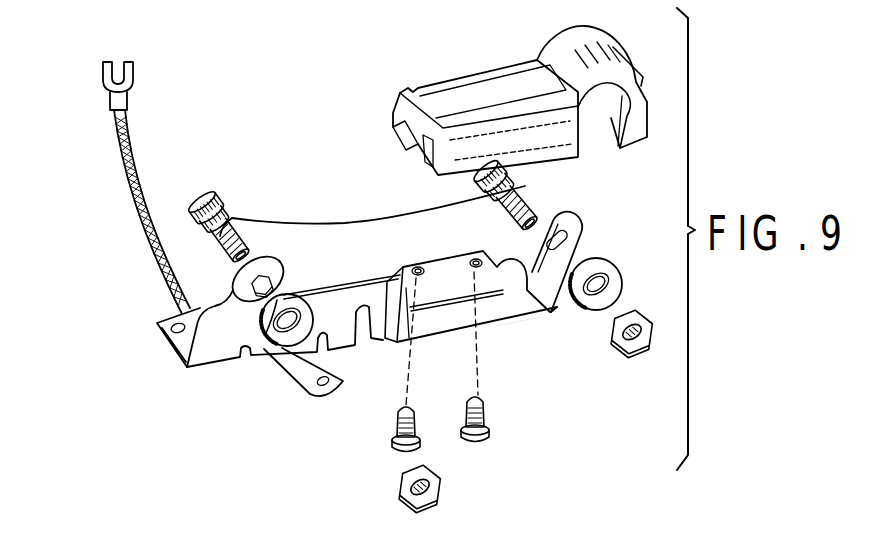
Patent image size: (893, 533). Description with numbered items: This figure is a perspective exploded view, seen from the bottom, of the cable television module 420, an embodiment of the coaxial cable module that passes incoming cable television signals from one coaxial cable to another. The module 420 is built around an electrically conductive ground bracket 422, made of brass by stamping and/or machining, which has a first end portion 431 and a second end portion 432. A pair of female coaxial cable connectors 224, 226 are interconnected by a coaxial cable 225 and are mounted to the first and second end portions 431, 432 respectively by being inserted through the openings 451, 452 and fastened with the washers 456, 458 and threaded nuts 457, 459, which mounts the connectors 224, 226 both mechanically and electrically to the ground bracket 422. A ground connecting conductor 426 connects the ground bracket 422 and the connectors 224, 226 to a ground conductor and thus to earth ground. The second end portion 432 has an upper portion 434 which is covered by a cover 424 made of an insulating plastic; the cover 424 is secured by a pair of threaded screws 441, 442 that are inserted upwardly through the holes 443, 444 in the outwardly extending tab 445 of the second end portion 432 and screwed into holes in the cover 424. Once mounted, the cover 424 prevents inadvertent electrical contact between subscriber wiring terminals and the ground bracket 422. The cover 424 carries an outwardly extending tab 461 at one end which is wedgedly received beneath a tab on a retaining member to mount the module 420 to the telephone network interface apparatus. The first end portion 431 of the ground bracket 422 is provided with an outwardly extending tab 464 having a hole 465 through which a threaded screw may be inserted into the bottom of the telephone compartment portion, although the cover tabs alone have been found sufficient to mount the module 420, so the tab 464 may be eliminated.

The cable television module 420 is at (352, 114).
The cover 424 is at (500, 28).
The outwardly extending tab 461 is at (395, 149).
The ground connecting conductor 426 is at (120, 148).
The female coaxial cable connector 224 is at (212, 254).
The female coaxial cable connector 226 is at (548, 188).
The coaxial cable 225 is at (342, 182).
The first end portion 431 is at (192, 377).
The opening 451 is at (286, 284).
The washer 456 is at (268, 354).
The hole 465 is at (350, 410).
The outwardly extending tab 464 is at (330, 358).
The ground bracket 422 is at (442, 334).
The hole 443 is at (419, 266).
The hole 444 is at (475, 258).
The opening 452 is at (553, 222).
The upper portion 434 is at (596, 226).
The second end portion 432 is at (566, 258).
The outwardly extending tab 445 is at (523, 320).
The washer 458 is at (616, 262).
The threaded screw 441 is at (393, 447).
The threaded screw 442 is at (489, 430).
The threaded nut 457 is at (401, 492).
The threaded nut 459 is at (620, 356).